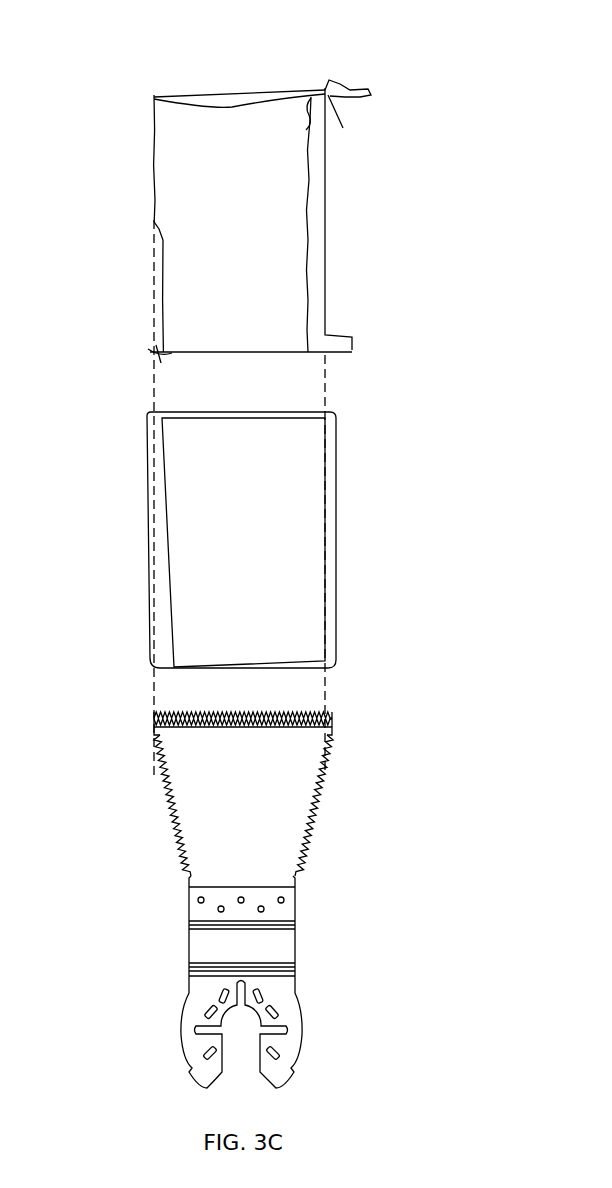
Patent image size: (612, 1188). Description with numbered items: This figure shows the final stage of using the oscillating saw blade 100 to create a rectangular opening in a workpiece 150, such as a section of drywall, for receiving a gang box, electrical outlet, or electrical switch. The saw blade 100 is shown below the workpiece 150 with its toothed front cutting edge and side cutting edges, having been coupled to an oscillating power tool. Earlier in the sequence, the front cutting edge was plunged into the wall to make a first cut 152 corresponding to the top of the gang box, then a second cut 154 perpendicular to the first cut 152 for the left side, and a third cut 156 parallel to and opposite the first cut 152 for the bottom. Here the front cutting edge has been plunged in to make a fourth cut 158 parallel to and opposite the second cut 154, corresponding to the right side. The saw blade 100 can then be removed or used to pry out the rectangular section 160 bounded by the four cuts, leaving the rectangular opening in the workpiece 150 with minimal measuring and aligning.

The saw blade 100 is at (330, 808).
The workpiece 150 is at (339, 228).
The first cut 152 is at (232, 94).
The second cut 154 is at (153, 233).
The third cut 156 is at (310, 350).
The fourth cut 158 is at (300, 248).
The rectangular section 160 is at (232, 545).